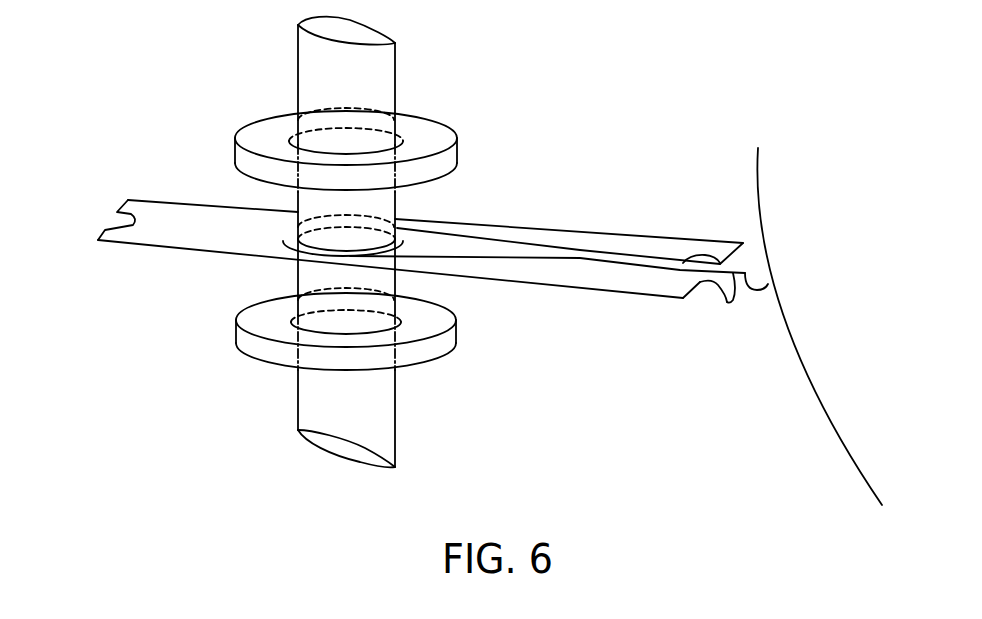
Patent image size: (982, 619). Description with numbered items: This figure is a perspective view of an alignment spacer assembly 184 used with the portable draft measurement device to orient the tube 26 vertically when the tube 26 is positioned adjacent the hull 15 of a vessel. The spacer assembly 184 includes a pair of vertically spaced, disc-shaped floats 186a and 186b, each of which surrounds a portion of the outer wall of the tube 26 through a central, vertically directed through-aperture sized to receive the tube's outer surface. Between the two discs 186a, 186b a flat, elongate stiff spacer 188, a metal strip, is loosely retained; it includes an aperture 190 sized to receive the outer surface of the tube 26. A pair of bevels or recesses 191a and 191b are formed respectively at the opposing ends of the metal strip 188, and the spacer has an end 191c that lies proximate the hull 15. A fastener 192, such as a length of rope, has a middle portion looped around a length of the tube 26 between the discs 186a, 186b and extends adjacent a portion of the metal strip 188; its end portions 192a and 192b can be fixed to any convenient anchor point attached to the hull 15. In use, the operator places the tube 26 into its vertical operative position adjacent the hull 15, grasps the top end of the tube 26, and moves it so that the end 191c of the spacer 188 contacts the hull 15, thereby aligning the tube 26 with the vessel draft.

The alignment spacer assembly 184 is at (526, 118).
The tube 26 is at (298, 50).
The disc-shaped float 186a is at (253, 130).
The disc-shaped float 186b is at (237, 333).
The aperture 190 is at (287, 232).
The spacer 188 is at (503, 227).
The bevel 191a is at (118, 218).
The bevel 191b is at (717, 258).
The end 191c is at (737, 242).
The fastener 192 is at (615, 267).
The end portion 192a is at (727, 303).
The end portion 192b is at (770, 286).
The hull 15 is at (753, 163).